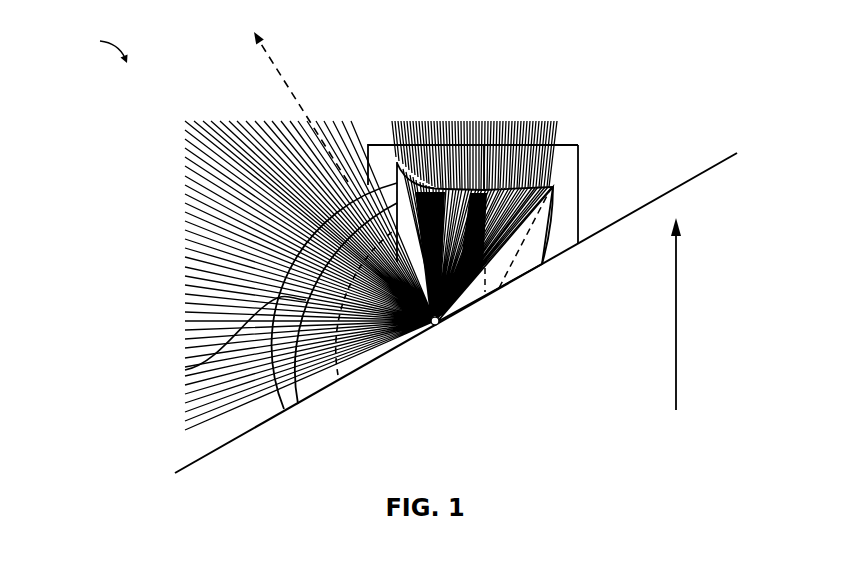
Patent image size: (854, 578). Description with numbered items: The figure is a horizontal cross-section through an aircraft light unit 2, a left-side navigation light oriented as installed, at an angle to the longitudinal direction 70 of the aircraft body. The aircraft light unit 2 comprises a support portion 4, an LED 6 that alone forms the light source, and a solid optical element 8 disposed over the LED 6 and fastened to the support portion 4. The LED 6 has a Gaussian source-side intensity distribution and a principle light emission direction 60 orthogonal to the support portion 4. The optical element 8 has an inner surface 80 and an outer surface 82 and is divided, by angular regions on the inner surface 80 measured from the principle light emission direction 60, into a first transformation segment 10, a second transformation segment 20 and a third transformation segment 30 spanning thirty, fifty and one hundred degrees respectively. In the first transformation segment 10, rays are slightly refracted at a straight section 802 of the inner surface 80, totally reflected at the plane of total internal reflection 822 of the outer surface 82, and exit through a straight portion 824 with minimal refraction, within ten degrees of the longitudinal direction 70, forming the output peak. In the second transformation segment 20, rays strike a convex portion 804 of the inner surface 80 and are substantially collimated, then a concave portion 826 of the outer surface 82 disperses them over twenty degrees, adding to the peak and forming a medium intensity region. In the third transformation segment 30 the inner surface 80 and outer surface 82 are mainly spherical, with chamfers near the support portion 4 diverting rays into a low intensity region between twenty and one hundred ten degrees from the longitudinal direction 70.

The aircraft light unit 2 is at (104, 48).
The support portion 4 is at (598, 232).
The LED 6 is at (438, 324).
The optical element 8 is at (185, 370).
The first transformation segment 10 is at (579, 172).
The second transformation segment 20 is at (380, 144).
The third transformation segment 30 is at (279, 414).
The principle light emission direction 60 is at (274, 63).
The longitudinal direction 70 is at (677, 313).
The inner surface 80 is at (338, 372).
The outer surface 82 is at (303, 393).
The straight section 802 is at (495, 281).
The convex portion 804 is at (417, 264).
The plane of total internal reflection 822 is at (552, 218).
The straight portion of the outer surface 824 is at (576, 144).
The concave portion 826 is at (412, 146).